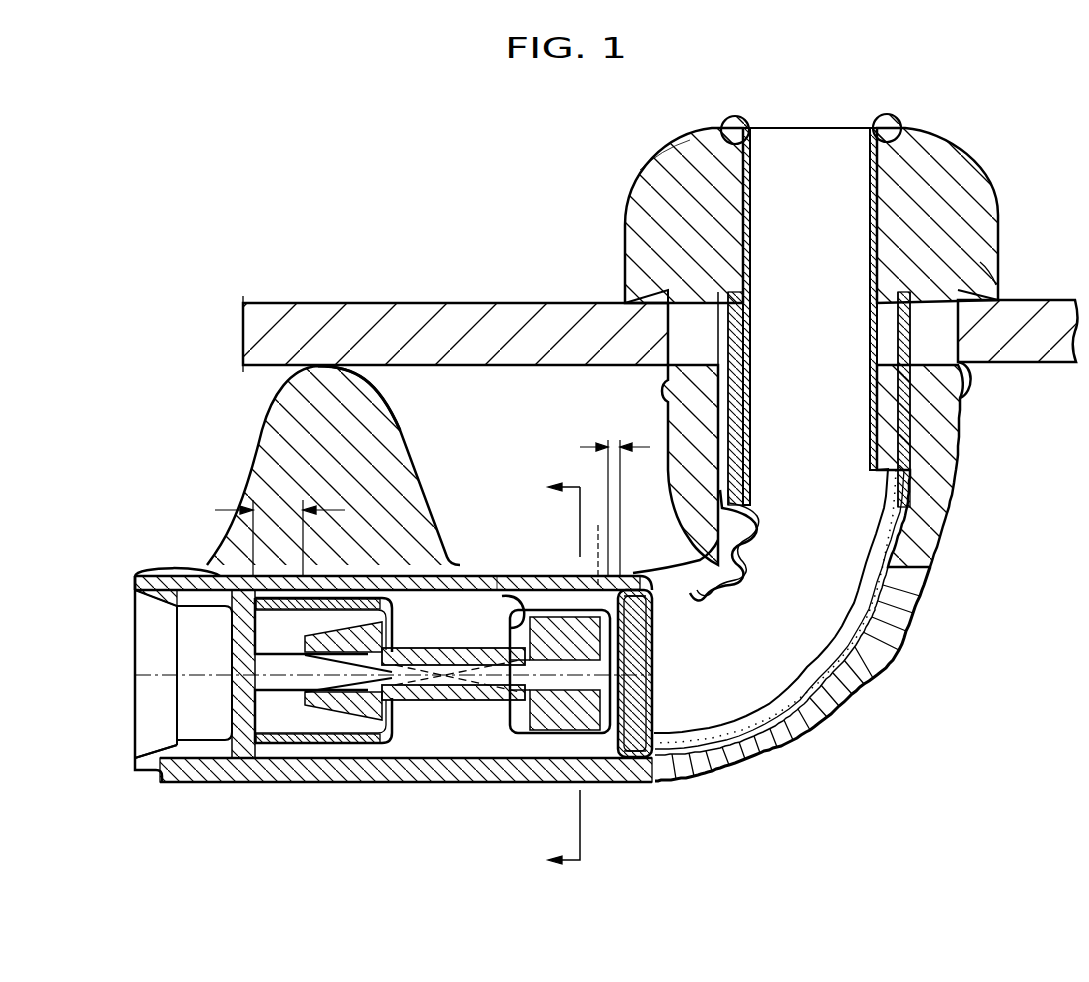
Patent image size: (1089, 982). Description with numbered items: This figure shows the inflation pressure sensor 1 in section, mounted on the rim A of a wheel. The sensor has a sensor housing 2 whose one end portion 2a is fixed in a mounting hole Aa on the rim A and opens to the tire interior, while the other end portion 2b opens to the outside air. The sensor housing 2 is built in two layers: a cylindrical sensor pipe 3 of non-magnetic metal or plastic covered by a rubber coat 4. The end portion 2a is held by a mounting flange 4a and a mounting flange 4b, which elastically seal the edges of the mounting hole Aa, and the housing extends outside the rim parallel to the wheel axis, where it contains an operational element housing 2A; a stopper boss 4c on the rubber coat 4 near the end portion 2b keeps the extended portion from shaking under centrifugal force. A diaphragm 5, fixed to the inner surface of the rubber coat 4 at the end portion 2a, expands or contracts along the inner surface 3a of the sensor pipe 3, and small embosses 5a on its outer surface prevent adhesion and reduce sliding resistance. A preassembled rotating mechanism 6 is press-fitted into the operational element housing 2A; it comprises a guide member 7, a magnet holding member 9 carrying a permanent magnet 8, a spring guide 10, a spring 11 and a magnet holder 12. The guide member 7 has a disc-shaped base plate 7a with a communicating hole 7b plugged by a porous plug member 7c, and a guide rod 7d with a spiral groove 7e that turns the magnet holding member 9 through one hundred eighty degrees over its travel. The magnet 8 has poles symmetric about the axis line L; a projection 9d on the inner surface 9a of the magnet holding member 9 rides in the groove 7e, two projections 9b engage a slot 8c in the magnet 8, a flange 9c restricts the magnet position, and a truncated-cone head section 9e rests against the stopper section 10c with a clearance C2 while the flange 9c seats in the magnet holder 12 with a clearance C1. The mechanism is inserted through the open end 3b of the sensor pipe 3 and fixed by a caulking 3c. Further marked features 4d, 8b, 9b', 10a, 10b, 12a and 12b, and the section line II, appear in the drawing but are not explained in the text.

The inflation pressure sensor 1 is at (414, 210).
The sensor housing 2 is at (497, 575).
The one end portion 2a is at (672, 182).
The operational element housing 2A is at (460, 800).
The other end portion 2b is at (165, 566).
The sensor pipe 3 is at (510, 575).
The inner surface 3a is at (716, 742).
The open end 3b is at (136, 574).
The caulking 3c is at (165, 757).
The rubber coat 4 is at (666, 396).
The mounting flange 4a is at (980, 262).
The mounting flange 4b is at (968, 385).
The stopper boss 4c is at (285, 422).
The grommet bead 4d is at (693, 148).
The diaphragm 5 is at (862, 180).
The small embosses 5a is at (900, 585).
The rotating mechanism 6 is at (272, 798).
The guide member 7 is at (212, 782).
The base plate 7a is at (187, 783).
The communicating hole 7b is at (236, 770).
The plug member 7c is at (296, 765).
The guide rod 7d is at (500, 760).
The spiral groove 7e is at (378, 758).
The permanent magnet 8 is at (600, 745).
The mating terminal lower wall 8b is at (540, 782).
The slot 8c is at (545, 606).
The magnet holding member 9 is at (470, 782).
The inner surface 9a is at (470, 592).
The projections 9b is at (557, 541).
The terminal contact tab lower 9b' is at (561, 796).
The flange 9c is at (522, 770).
The projection 9d is at (410, 580).
The head section 9e is at (385, 784).
The spring guide 10 is at (330, 758).
The retainer lower arm 10a is at (350, 745).
The retainer end wall 10b is at (232, 624).
The stopper section 10c is at (440, 770).
The spring 11 is at (430, 760).
The magnet holder 12 is at (644, 760).
The seal lower lip 12a is at (628, 782).
The seal upper lip 12b is at (634, 590).
The rim A is at (383, 302).
The mounting hole Aa is at (626, 300).
The clearance C1 is at (615, 496).
The clearance C2 is at (280, 537).
The axis line L is at (600, 554).
The section line II- II is at (564, 674).